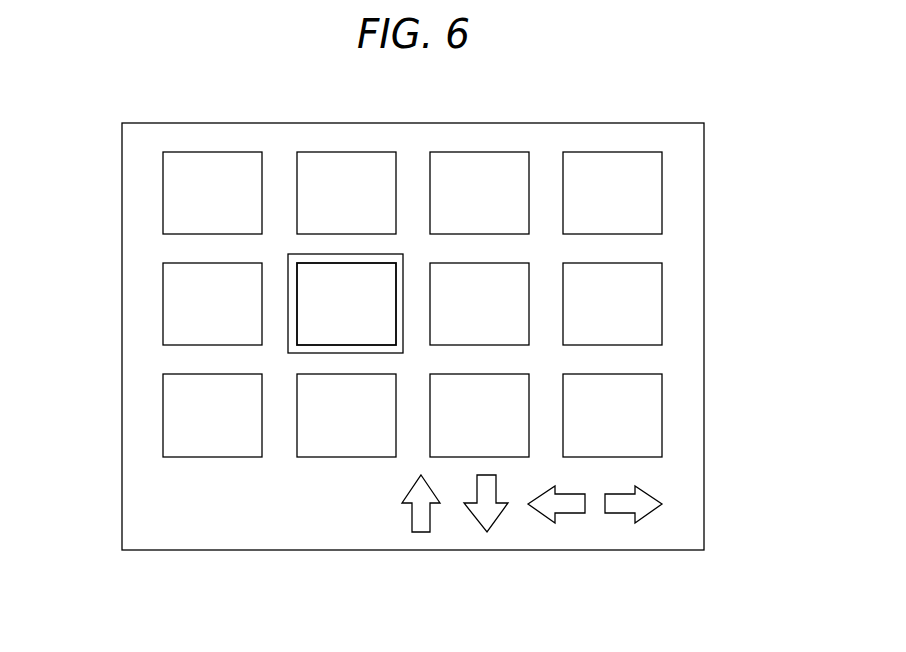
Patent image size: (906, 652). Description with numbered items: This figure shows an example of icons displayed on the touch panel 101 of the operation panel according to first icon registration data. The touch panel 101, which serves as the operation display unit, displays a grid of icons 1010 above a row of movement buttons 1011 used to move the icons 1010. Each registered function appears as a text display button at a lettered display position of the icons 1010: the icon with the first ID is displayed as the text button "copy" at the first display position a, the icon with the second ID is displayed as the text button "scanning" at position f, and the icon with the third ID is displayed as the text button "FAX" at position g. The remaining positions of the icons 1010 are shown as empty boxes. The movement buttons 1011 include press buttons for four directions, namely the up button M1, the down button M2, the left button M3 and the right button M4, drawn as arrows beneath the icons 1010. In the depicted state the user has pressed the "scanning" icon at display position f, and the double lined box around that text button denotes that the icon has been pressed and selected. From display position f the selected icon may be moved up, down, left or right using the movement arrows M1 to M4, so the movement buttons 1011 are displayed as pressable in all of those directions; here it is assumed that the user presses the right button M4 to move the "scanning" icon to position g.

The touch panel 101 is at (705, 197).
The icons 1010 is at (346, 266).
The movement buttons 1011 is at (346, 544).
The first display position a is at (217, 151).
The display position f is at (397, 278).
The display position g is at (528, 280).
The up button M1 is at (408, 520).
The down button M2 is at (472, 520).
The left button M3 is at (572, 515).
The right button M4 is at (620, 515).